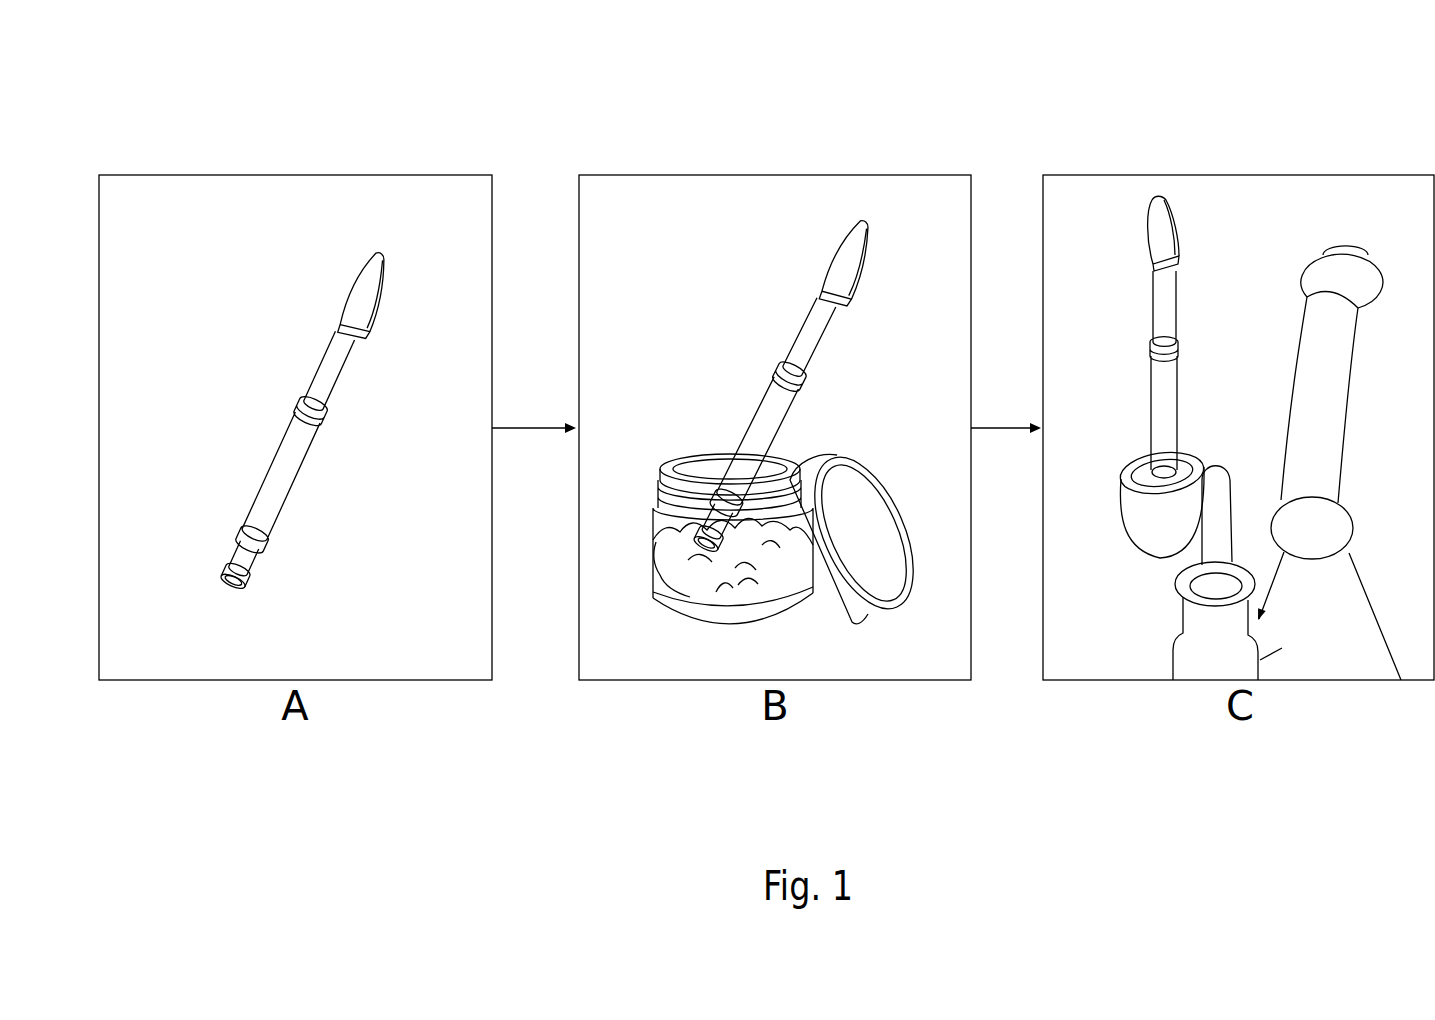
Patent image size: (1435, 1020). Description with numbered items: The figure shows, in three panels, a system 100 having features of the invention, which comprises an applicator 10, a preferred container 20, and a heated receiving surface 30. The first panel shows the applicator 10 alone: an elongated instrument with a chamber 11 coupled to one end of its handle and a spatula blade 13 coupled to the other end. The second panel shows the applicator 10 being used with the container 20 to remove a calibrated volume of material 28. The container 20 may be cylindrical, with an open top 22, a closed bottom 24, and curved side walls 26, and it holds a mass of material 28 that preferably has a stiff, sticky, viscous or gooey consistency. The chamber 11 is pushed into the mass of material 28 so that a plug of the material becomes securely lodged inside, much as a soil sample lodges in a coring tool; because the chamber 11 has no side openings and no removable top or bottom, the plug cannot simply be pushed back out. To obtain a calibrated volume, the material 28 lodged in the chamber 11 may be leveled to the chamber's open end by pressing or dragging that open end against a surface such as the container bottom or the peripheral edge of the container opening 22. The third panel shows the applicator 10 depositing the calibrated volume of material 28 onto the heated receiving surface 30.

In FIG. 1A, the applicator 10 is at (253, 213).
In FIG. 1B, the applicator 10 is at (810, 297).
In FIG. 1C, the applicator 10 is at (1185, 302).
In FIG. 1A, the chamber 11 is at (229, 594).
In FIG. 1B, the chamber 11 is at (698, 548).
In FIG. 1A, the spatula blade 13 is at (389, 268).
In FIG. 1B, the container 20 is at (667, 622).
In FIG. 1B, the open top 22 is at (702, 474).
In FIG. 1B, the closed bottom 24 is at (782, 616).
In FIG. 1B, the curved side walls 26 is at (637, 548).
In FIG. 1B, the material 28 is at (722, 598).
In FIG. 1C, the heated receiving surface 30 is at (1155, 538).
In FIG. 1B, the system 100 is at (938, 118).